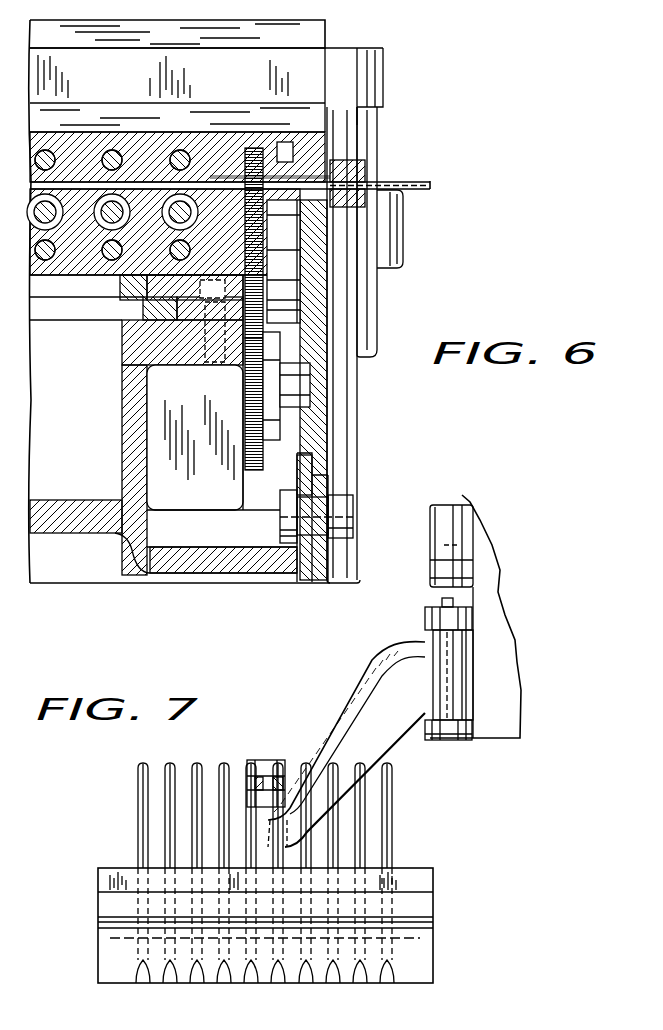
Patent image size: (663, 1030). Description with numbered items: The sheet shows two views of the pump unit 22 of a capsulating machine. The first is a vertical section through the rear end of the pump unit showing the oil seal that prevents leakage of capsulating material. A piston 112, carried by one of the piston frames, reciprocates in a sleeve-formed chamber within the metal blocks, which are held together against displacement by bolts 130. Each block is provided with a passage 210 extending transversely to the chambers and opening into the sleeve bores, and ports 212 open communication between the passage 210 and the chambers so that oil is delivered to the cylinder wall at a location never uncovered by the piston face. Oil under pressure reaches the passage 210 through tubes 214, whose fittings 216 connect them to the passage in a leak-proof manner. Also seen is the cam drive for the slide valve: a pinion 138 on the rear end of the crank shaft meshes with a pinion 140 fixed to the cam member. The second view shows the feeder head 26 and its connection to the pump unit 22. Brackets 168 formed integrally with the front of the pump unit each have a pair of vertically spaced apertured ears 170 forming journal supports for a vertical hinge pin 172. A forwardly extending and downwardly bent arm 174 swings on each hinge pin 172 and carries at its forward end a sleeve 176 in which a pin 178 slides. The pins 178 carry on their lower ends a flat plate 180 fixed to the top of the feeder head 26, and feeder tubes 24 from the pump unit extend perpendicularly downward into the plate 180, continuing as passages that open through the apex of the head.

In FIG. 6, the ports 212 is at (92, 153).
In FIG. 6, the passage 210 is at (156, 150).
In FIG. 6, the bolts 130 is at (180, 145).
In FIG. 6, the fittings 216 is at (358, 162).
In FIG. 6, the tubes 214 is at (418, 177).
In FIG. 6, the piston 112 is at (120, 274).
In FIG. 6, the pinion 140 is at (258, 276).
In FIG. 6, the pinion 138 is at (280, 437).
In FIG. 7, the apertured ears 170 is at (428, 617).
In FIG. 7, the brackets 168 is at (470, 653).
In FIG. 7, the pump unit 22 is at (510, 666).
In FIG. 7, the hinge pin 172 is at (455, 700).
In FIG. 7, the arm 174 is at (360, 705).
In FIG. 7, the sleeves 176 is at (247, 800).
In FIG. 7, the pin 178 is at (288, 806).
In FIG. 7, the tubes 24 is at (142, 847).
In FIG. 7, the flat plate 180 is at (98, 885).
In FIG. 7, the feeder head 26 is at (433, 920).